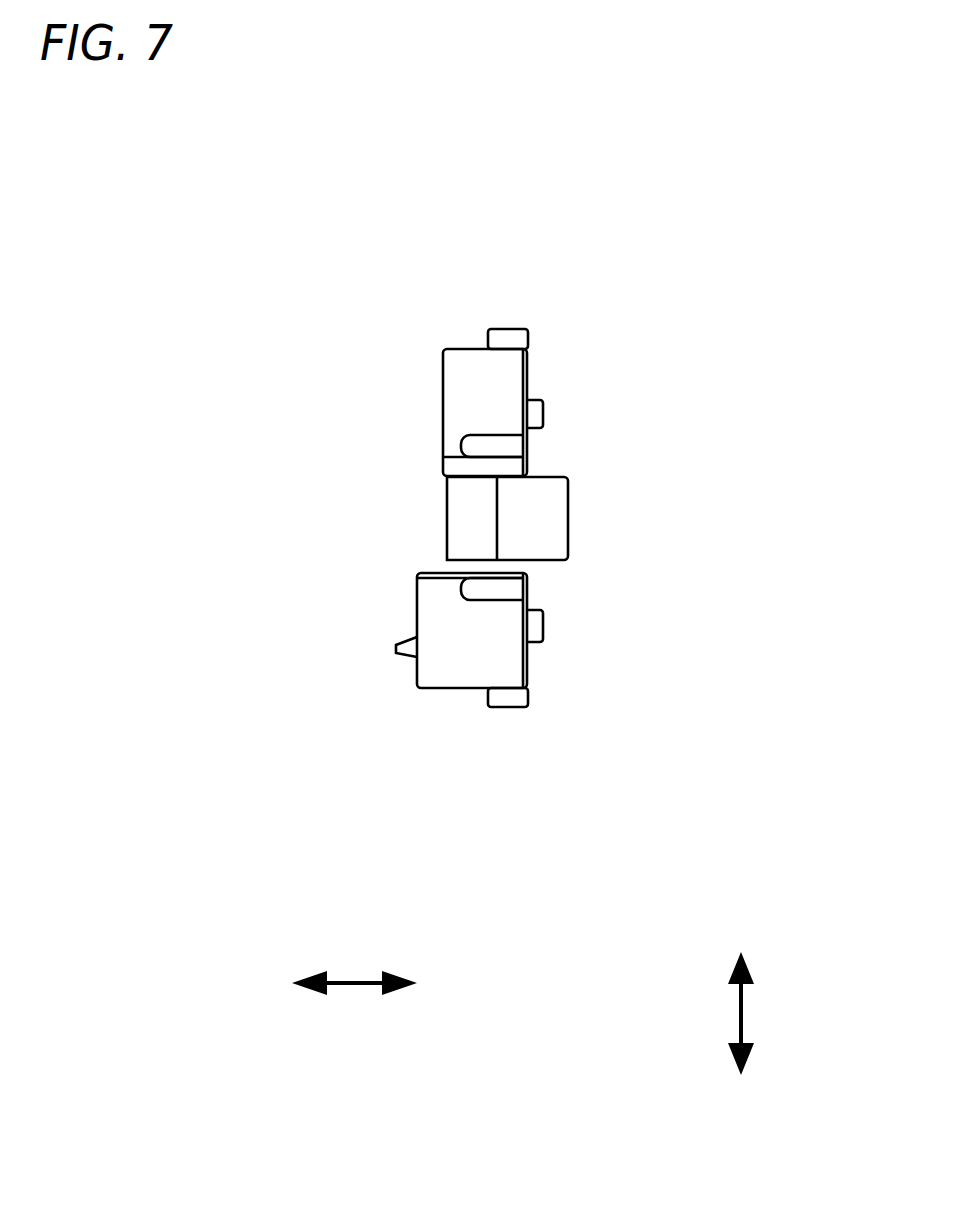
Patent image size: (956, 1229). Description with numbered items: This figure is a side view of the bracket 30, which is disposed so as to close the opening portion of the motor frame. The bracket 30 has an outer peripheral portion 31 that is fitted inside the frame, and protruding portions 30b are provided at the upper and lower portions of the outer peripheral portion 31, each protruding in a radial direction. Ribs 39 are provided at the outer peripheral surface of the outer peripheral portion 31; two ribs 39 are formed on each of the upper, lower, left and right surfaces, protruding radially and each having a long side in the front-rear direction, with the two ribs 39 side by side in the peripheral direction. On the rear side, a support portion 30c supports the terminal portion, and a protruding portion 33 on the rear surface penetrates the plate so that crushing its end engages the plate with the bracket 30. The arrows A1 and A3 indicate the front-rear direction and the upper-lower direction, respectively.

The bracket 30 is at (273, 128).
The protruding portion 30b is at (516, 337).
The support portion 30c is at (542, 525).
The outer peripheral portion 31 is at (473, 407).
The protruding portion 33 is at (543, 632).
The rib 39 is at (482, 591).
The front-rear direction A1 is at (375, 985).
The upper-lower direction A3 is at (738, 1007).